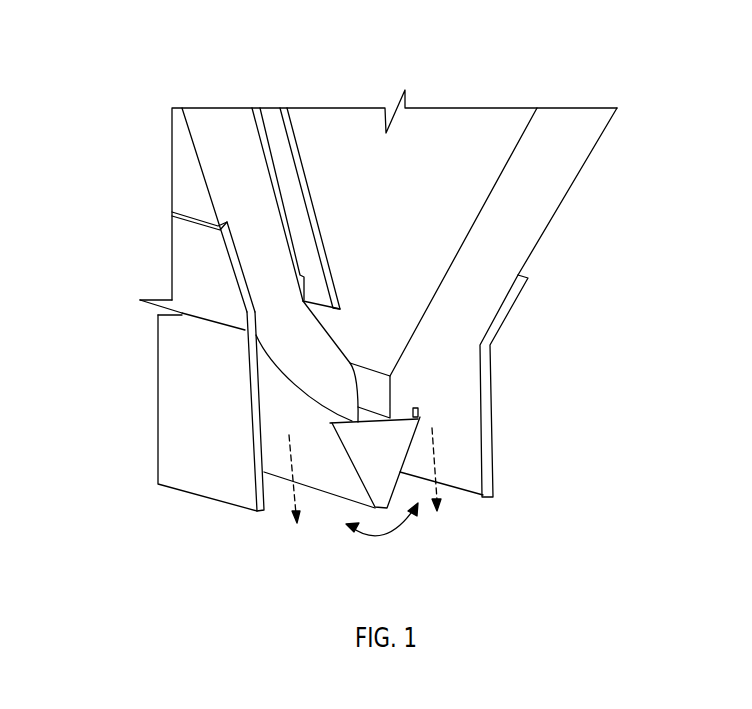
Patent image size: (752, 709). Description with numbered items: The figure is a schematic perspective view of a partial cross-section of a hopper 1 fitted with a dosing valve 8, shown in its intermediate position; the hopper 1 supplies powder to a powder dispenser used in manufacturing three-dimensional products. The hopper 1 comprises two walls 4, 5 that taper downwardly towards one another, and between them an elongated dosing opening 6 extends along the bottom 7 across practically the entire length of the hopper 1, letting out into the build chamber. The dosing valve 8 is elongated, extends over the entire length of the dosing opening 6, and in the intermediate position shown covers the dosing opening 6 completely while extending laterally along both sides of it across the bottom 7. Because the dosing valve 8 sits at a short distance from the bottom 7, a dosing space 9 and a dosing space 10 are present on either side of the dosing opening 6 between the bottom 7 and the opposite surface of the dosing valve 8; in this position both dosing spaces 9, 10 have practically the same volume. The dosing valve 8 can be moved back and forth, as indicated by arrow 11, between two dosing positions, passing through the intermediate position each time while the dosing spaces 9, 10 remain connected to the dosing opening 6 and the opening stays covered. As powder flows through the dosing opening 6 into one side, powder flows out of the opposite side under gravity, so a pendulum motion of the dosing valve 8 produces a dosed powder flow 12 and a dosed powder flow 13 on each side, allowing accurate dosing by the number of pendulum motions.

The hopper 1 is at (141, 149).
The wall 4 is at (227, 197).
The wall 5 is at (547, 208).
The dosing opening 6 is at (398, 400).
The bottom 7 is at (352, 423).
The dosing valve 8 is at (375, 448).
The dosing space 9 is at (357, 421).
The dosing space 10 is at (378, 400).
The arrow 11 is at (388, 534).
The dosed powder flow 12 is at (292, 488).
The dosed powder flow 13 is at (437, 492).